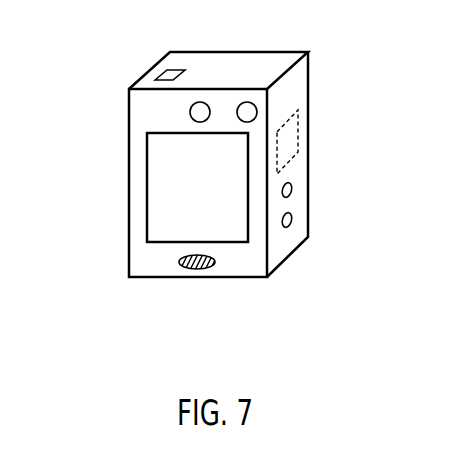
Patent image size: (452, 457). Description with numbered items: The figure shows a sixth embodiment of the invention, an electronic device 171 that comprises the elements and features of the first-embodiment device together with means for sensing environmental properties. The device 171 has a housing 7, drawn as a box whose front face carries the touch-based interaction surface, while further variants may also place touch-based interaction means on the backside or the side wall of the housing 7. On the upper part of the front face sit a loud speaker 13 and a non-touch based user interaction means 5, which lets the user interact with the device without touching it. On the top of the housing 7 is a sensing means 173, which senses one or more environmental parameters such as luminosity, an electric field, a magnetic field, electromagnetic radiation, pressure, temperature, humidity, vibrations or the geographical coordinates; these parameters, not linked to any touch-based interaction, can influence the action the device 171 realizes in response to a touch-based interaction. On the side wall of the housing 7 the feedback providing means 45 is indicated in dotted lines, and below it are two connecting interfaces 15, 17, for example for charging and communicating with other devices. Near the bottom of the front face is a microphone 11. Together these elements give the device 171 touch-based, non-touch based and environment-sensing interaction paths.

The housing 7 is at (288, 60).
The electronic device 171 is at (128, 177).
The sensing means 173 is at (165, 66).
The loud speaker 13 is at (200, 102).
The non-touch based user interaction means 5 is at (247, 102).
The feedback providing means 45 is at (299, 128).
The connecting interface 15 is at (291, 190).
The connecting interface 17 is at (291, 218).
The microphone 11 is at (207, 268).